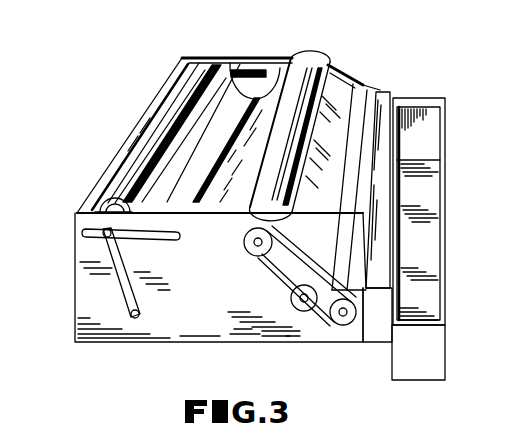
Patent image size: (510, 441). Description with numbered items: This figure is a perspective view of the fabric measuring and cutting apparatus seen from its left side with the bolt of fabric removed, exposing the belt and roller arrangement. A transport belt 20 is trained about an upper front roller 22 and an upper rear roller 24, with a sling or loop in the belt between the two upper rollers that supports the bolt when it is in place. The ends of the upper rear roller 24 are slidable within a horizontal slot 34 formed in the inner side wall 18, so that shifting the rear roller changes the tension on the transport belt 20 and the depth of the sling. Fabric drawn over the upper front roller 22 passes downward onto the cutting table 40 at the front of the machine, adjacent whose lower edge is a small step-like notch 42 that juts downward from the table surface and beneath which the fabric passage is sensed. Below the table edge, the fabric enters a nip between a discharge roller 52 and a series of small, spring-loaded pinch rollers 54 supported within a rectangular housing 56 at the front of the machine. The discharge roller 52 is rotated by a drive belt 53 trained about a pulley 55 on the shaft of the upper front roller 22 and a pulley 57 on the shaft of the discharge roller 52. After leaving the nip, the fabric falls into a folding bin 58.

The inner side wall 18 is at (199, 313).
The transport belt 20 is at (233, 76).
The upper front roller 22 is at (318, 60).
The upper rear roller 24 is at (103, 203).
The horizontal slot 34 is at (163, 235).
The cutting table 40 is at (347, 88).
The step-like notch 42 is at (343, 198).
The discharge roller 52 is at (357, 243).
The drive belt 53 is at (282, 273).
The pinch rollers 54 is at (370, 210).
The pulley 55 is at (259, 255).
The rectangular housing 56 is at (385, 103).
The pulley 57 is at (341, 326).
The folding bin 58 is at (446, 308).